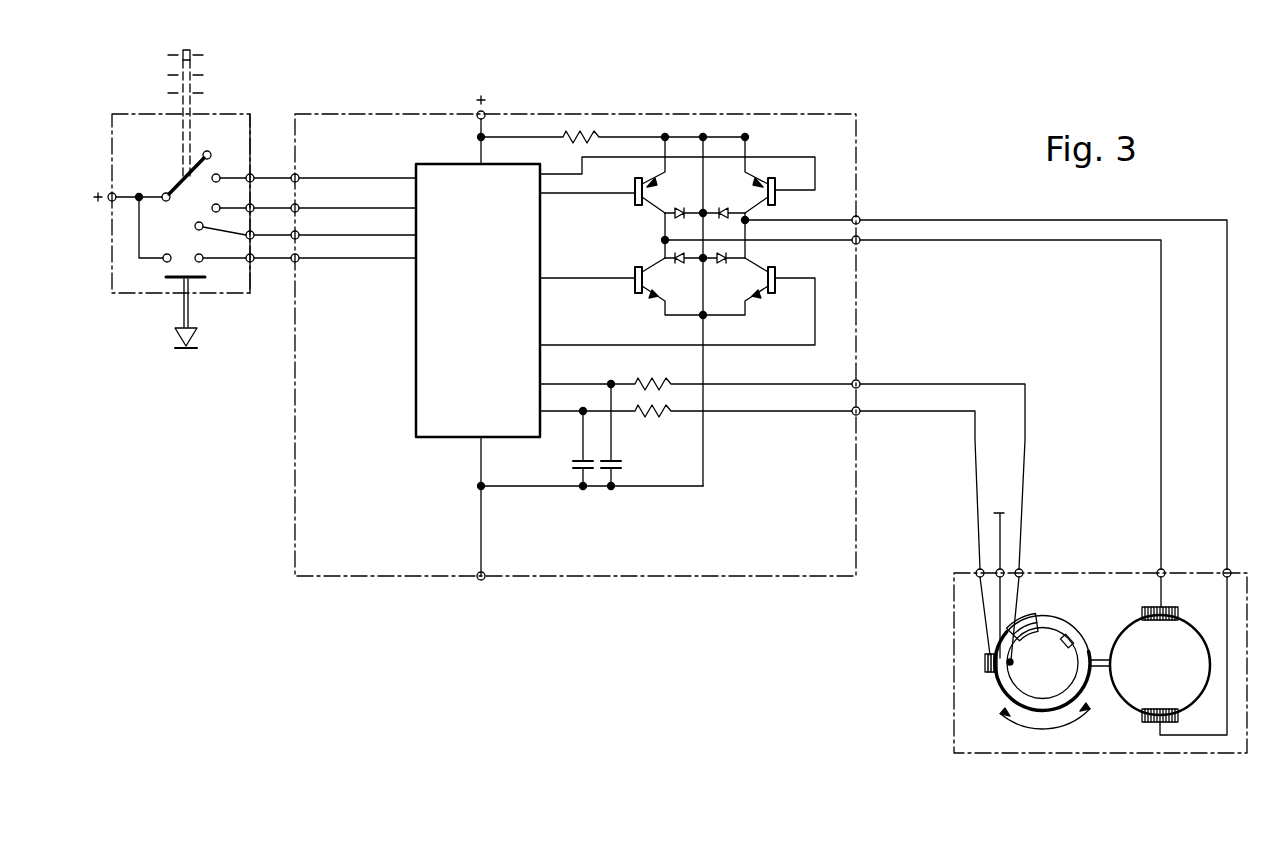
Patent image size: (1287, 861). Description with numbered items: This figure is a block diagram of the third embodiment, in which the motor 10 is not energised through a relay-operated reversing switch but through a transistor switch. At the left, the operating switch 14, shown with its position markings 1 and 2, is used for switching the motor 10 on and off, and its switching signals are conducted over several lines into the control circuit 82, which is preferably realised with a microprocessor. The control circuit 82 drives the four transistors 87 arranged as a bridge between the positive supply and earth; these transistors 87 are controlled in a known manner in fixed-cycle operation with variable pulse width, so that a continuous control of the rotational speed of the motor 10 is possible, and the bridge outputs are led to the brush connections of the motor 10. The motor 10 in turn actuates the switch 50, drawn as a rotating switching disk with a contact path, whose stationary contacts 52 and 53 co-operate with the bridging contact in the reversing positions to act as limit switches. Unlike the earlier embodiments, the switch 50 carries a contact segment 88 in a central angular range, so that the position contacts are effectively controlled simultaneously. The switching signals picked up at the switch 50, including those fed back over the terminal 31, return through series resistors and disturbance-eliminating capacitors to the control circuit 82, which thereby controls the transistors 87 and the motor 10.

The switch position marker 1 is at (195, 76).
The switch position marker 2 is at (195, 75).
The operating switch 14 is at (193, 197).
The control circuit 82 is at (426, 342).
The transistors 87 is at (633, 268).
The sensor terminal 31 is at (998, 531).
The contact segment 88 is at (1028, 618).
The stationary contact 53 is at (1072, 638).
The stationary contact 52 is at (988, 673).
The switch 50 is at (1050, 673).
The motor 10 is at (1170, 673).